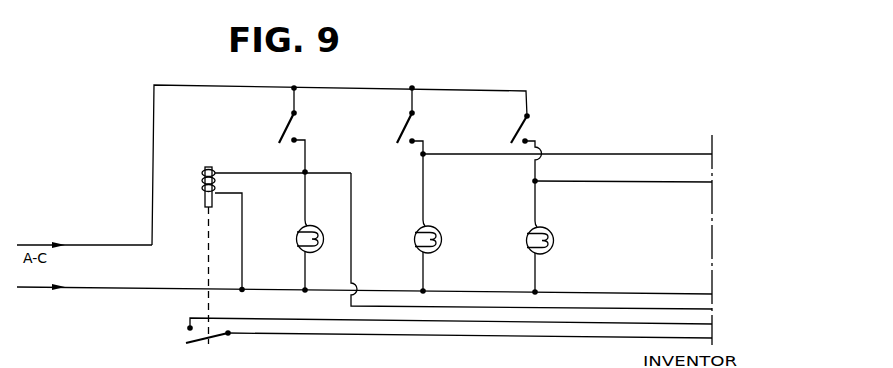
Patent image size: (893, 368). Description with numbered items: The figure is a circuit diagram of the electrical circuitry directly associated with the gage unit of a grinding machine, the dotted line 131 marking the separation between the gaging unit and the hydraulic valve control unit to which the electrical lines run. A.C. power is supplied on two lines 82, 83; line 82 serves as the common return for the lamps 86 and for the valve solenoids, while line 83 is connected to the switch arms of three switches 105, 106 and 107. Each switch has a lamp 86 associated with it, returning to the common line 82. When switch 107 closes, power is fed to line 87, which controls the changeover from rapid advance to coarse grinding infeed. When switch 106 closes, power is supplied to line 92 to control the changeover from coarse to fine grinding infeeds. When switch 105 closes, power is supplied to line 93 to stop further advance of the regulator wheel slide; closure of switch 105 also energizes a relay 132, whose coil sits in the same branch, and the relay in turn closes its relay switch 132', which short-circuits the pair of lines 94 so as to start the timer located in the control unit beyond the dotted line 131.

The line 82 is at (90, 288).
The line 83 is at (118, 245).
The lamps 86 is at (312, 196).
The line 87 is at (630, 182).
The line 92 is at (625, 154).
The line 93 is at (656, 309).
The lines 94 is at (584, 324).
The switch 105 is at (287, 128).
The switch 106 is at (405, 126).
The switch 107 is at (519, 127).
The dotted line 131 is at (715, 141).
The relay 132 is at (254, 255).
The relay switch 132' is at (449, 339).